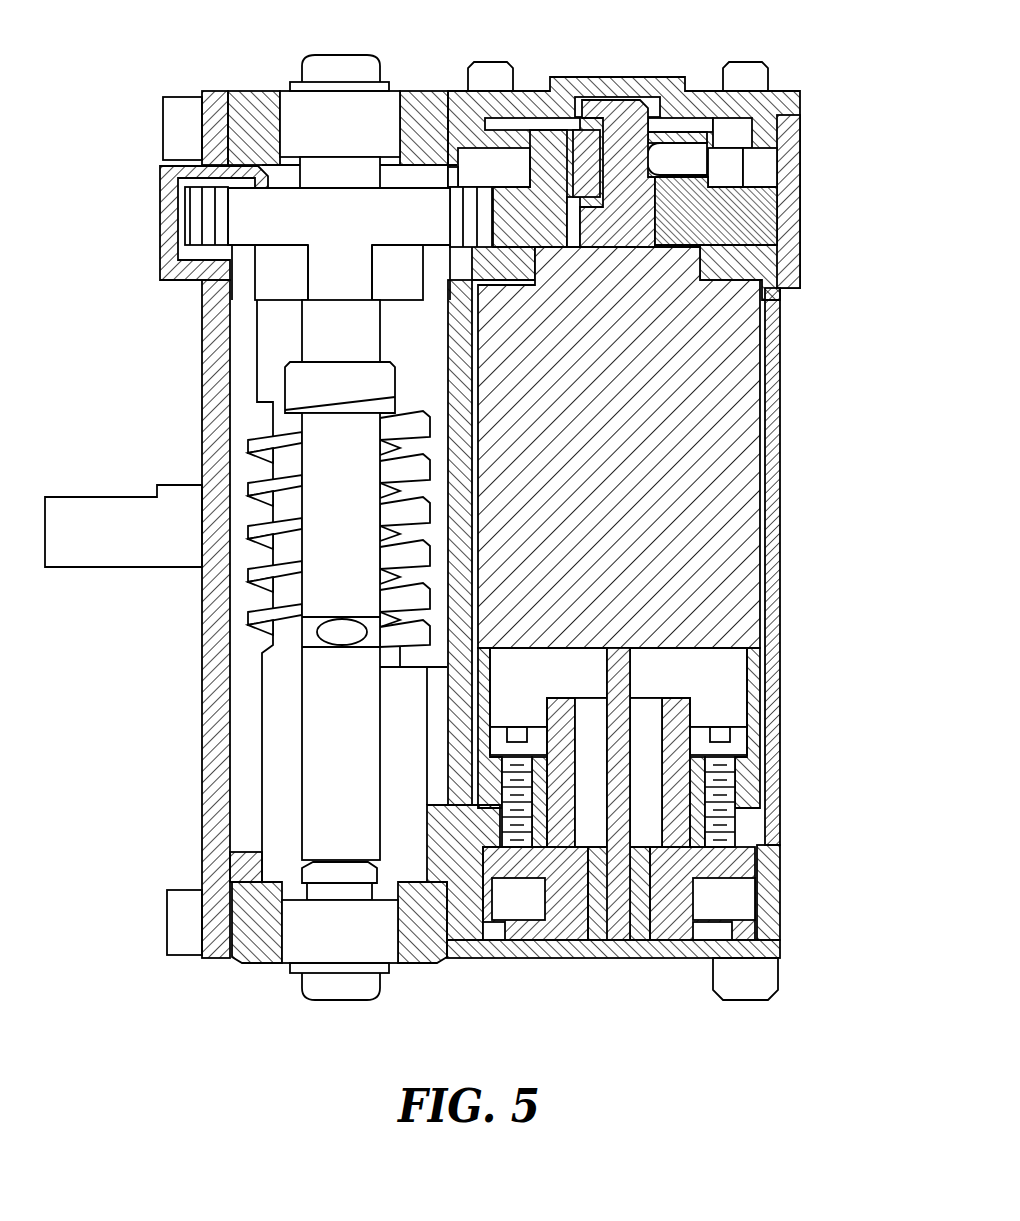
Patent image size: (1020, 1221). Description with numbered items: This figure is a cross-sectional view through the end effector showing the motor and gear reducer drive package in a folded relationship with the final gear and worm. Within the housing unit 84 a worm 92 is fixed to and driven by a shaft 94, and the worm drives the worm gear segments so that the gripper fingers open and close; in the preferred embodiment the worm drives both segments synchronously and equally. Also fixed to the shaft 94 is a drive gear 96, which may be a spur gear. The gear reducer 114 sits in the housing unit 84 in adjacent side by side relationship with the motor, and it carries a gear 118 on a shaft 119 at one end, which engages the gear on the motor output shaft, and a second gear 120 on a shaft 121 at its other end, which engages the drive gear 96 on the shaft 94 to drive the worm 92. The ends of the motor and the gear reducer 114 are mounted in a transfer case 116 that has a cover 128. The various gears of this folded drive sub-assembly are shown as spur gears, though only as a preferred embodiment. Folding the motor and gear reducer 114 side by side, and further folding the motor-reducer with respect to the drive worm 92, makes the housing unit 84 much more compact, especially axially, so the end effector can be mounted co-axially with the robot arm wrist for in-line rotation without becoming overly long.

The housing unit 84 is at (790, 521).
The worm 92 is at (262, 446).
The shaft 94 is at (330, 700).
The drive gear 96 is at (268, 228).
The gear reducer 114 is at (680, 378).
The transfer case 116 is at (773, 839).
The gear 118 is at (680, 897).
The shaft 119 is at (617, 940).
The second gear 120 is at (745, 216).
The shaft 121 is at (625, 125).
The cover 128 is at (678, 965).